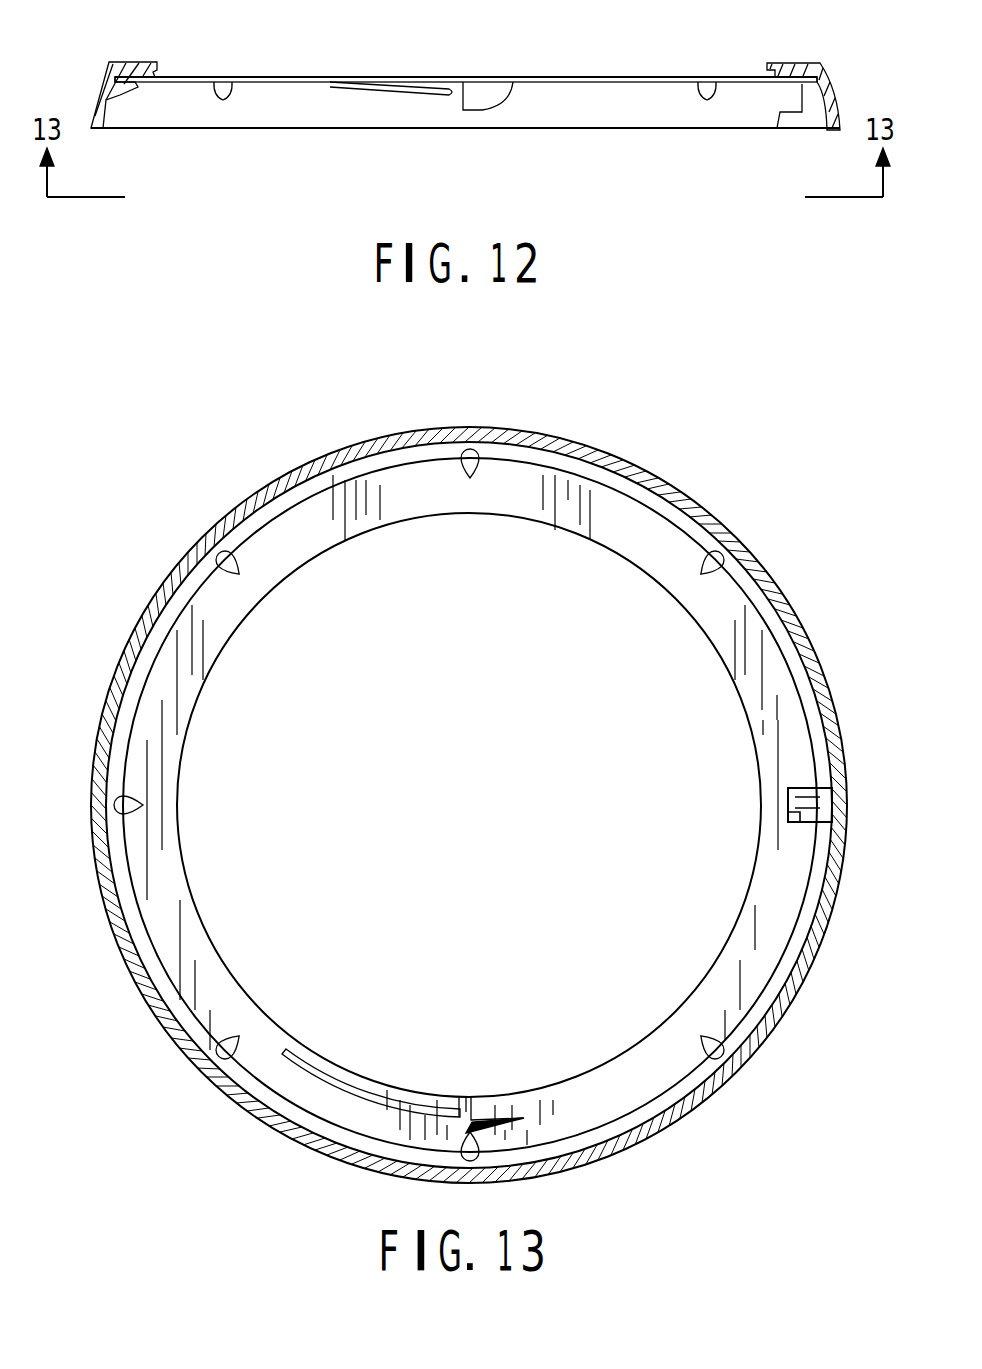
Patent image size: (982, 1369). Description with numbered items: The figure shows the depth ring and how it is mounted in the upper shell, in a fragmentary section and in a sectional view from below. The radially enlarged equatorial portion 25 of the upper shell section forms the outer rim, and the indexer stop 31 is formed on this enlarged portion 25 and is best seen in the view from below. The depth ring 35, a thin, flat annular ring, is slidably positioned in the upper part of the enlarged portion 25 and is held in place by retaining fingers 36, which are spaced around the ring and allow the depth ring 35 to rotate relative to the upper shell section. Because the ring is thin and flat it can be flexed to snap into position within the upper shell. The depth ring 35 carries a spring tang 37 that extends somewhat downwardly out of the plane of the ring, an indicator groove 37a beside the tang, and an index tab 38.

In FIG. 12, the equatorial portion 25 is at (97, 100).
In FIG. 13, the equatorial portion 25 is at (673, 485).
In FIG. 12, the indexer stop 31 is at (800, 97).
In FIG. 13, the indexer stop 31 is at (800, 822).
In FIG. 12, the depth ring 35 is at (558, 77).
In FIG. 13, the depth ring 35 is at (183, 690).
In FIG. 12, the retaining fingers 36 is at (120, 95).
In FIG. 13, the retaining fingers 36 is at (470, 477).
In FIG. 12, the spring tang 37 is at (430, 93).
In FIG. 13, the spring tang 37 is at (441, 1097).
In FIG. 13, the indicator groove 37a is at (467, 1097).
In FIG. 12, the index tab 38 is at (487, 100).
In FIG. 13, the index tab 38 is at (485, 1115).